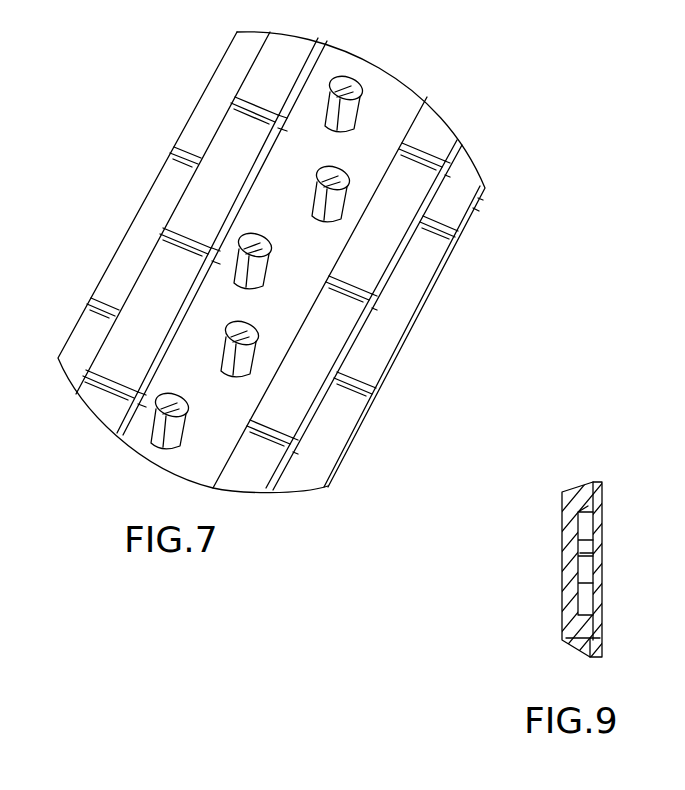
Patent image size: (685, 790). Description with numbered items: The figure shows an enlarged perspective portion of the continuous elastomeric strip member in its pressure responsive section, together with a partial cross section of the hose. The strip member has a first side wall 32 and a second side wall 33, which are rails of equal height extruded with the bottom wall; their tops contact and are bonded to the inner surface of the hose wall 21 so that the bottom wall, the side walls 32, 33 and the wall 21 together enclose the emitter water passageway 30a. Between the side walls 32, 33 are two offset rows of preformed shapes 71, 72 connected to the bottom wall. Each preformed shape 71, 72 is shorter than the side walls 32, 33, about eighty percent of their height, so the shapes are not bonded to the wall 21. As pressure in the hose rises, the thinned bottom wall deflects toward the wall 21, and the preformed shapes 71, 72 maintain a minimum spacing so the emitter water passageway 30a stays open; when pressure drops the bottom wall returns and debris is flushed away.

In FIG. 7, the first side wall 32 is at (182, 223).
In FIG. 7, the second side wall 33 is at (348, 282).
In FIG. 7, the preformed shapes 71 is at (321, 210).
In FIG. 7, the preformed shapes 72 is at (250, 280).
In FIG. 9, the wall 21 is at (605, 595).
In FIG. 9, the emitter water passageway 30a is at (587, 534).